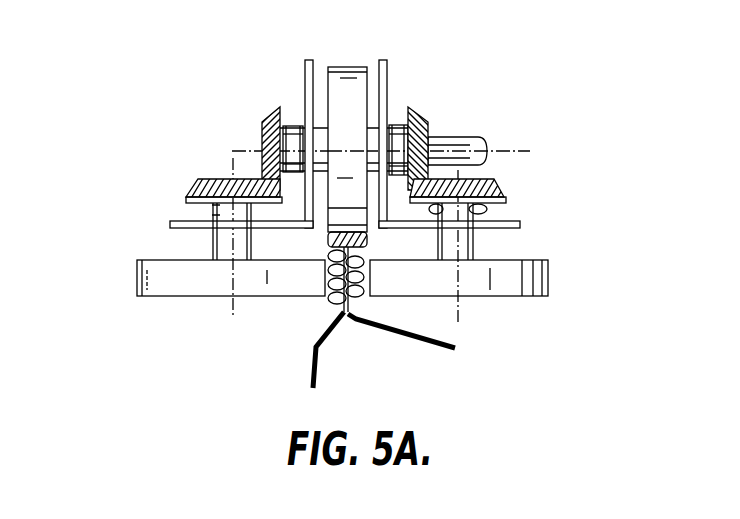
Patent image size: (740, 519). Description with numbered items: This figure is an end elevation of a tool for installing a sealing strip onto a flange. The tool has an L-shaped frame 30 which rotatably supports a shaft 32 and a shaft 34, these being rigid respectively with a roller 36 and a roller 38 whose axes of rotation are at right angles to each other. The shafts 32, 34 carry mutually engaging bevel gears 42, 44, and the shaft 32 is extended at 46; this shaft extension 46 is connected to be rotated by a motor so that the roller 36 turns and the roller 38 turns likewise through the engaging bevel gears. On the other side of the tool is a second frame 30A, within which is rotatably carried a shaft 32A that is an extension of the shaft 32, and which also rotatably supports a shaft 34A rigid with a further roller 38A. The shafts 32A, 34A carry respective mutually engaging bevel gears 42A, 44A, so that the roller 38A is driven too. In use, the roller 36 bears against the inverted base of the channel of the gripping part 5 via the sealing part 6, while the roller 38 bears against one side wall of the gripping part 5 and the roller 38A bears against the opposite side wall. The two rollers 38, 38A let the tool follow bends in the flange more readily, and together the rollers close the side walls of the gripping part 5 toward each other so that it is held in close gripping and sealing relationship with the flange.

The gripping part 5 is at (330, 303).
The sealing part 6 is at (372, 239).
The L-shaped frame 30 is at (390, 60).
The second frame 30A is at (313, 60).
The shaft 32 is at (396, 126).
The shaft 32A is at (295, 132).
The shaft 34 is at (487, 210).
The shaft 34A is at (213, 218).
The roller 36 is at (352, 67).
The roller 38 is at (548, 275).
The roller 38A is at (137, 275).
The bevel gear 42 is at (428, 120).
The bevel gear 42A is at (265, 122).
The bevel gear 44 is at (484, 191).
The bevel gear 44A is at (197, 193).
The shaft extension 46 is at (470, 137).